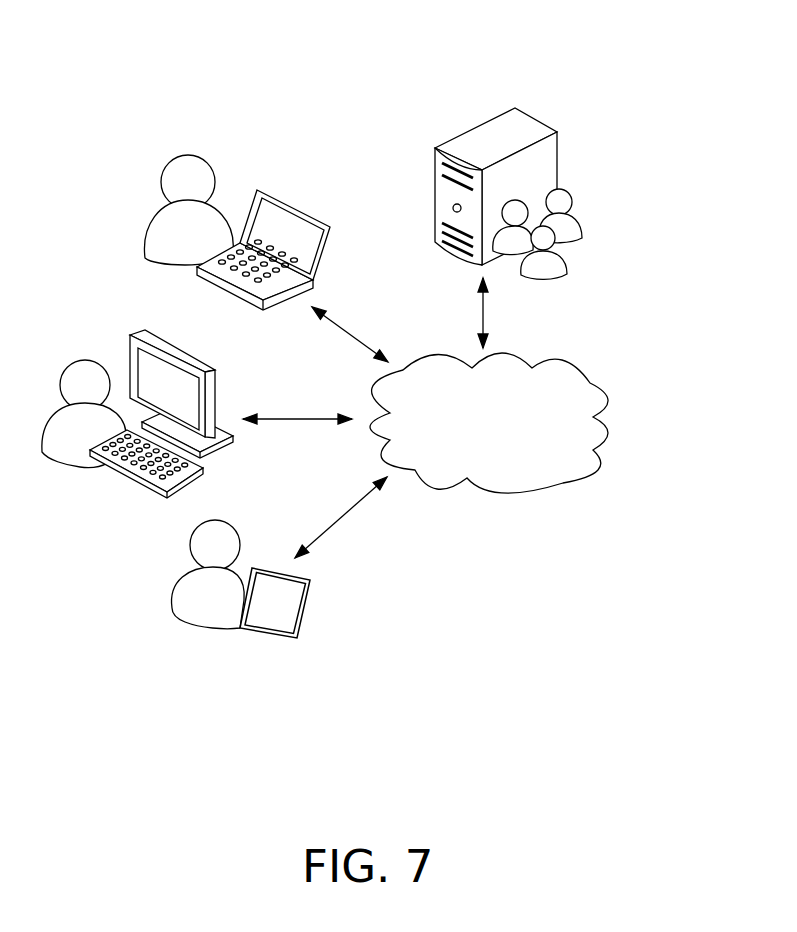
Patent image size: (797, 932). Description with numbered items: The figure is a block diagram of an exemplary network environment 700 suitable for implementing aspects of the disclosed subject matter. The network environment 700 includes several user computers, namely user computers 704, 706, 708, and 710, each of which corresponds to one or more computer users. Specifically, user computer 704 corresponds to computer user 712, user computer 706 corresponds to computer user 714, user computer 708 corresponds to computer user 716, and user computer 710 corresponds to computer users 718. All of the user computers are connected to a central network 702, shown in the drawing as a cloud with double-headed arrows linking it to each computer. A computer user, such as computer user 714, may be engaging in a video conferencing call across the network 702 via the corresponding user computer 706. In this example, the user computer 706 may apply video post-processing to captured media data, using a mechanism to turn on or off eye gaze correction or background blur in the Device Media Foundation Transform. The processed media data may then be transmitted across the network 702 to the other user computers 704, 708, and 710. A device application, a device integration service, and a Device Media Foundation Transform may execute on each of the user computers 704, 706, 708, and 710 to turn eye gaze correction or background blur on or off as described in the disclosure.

The network environment 700 is at (387, 825).
The network 702 is at (560, 488).
The user computer 704 is at (302, 617).
The user computer 706 is at (140, 337).
The user computer 708 is at (313, 213).
The user computer 710 is at (487, 122).
The computer user 712 is at (187, 620).
The computer user 714 is at (50, 460).
The computer user 716 is at (188, 157).
The computer users 718 is at (563, 275).